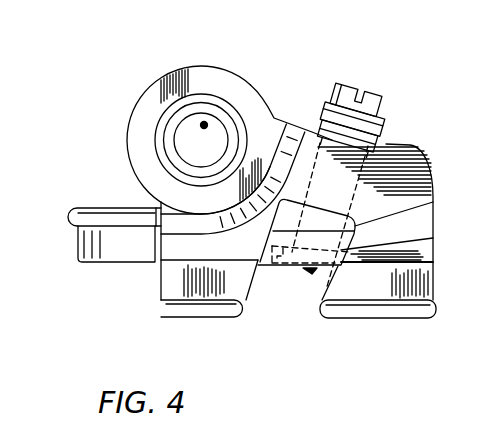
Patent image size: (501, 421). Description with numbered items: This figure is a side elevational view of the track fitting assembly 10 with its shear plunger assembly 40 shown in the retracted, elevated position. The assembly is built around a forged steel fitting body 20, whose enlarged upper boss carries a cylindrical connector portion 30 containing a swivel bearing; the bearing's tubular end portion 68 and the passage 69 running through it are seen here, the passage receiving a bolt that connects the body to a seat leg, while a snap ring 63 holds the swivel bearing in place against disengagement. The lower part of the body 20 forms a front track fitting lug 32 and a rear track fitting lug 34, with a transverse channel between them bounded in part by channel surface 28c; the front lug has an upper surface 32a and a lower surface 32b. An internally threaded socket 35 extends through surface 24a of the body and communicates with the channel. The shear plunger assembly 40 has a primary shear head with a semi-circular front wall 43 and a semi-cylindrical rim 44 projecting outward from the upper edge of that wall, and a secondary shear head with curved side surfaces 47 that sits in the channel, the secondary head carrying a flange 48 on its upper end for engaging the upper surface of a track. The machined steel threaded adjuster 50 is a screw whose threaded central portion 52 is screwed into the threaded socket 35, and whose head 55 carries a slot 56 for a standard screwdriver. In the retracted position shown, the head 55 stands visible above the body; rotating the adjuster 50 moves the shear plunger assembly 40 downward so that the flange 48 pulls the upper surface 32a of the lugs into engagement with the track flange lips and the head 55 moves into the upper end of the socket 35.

The track fitting assembly 10 is at (146, 78).
The fitting body 20 is at (183, 60).
The surface 24a is at (314, 130).
The channel surface 28c is at (326, 292).
The cylindrical connector portion 30 is at (132, 112).
The front track fitting lug 32 is at (205, 312).
The upper surface 32a is at (182, 297).
The lower surface 32b is at (176, 316).
The track fitting lug 34 is at (394, 308).
The threaded socket 35 is at (400, 164).
The shear plunger assembly 40 is at (80, 204).
The front wall 43 is at (80, 246).
The rim 44 is at (124, 207).
The curved side surfaces 47 is at (433, 239).
The flange 48 is at (433, 201).
The threaded adjuster 50 is at (336, 78).
The threaded central portion 52 is at (383, 144).
The head 55 is at (386, 109).
The slot 56 is at (361, 86).
The snap ring 63 is at (157, 152).
The tubular end portion 68 is at (177, 133).
The passage 69 is at (204, 125).